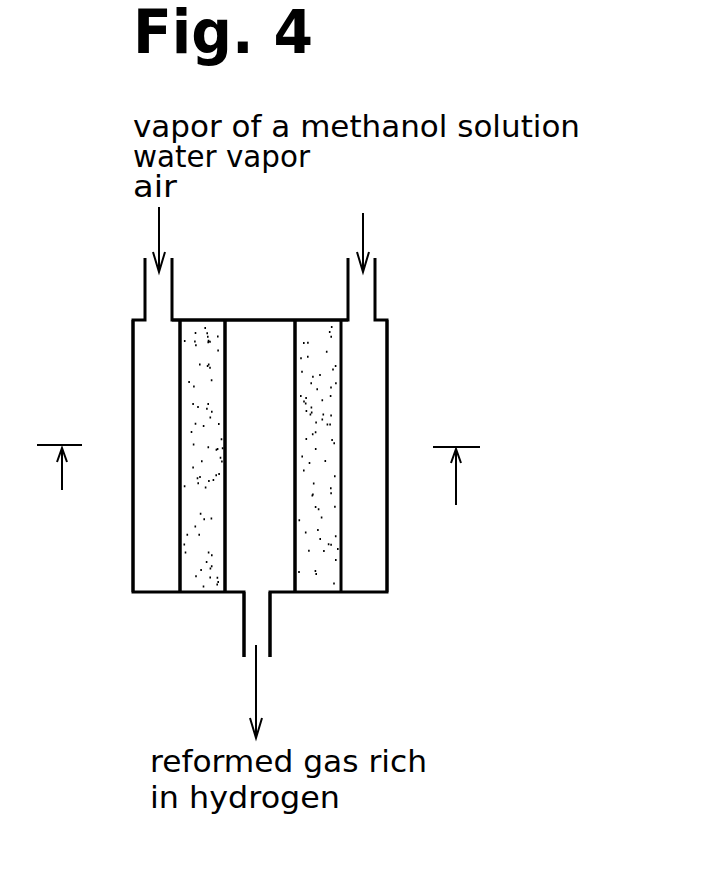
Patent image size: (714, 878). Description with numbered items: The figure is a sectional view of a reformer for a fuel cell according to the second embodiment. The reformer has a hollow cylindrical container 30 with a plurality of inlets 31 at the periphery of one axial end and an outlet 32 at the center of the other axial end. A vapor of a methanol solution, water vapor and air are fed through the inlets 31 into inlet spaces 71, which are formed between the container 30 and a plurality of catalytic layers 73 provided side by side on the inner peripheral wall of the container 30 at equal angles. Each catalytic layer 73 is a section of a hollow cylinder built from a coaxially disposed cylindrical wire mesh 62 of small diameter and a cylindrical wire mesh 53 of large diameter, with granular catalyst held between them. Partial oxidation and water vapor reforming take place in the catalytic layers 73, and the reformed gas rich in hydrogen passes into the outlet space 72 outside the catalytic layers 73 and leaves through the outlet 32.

The container 30 is at (133, 488).
The inlets 31 is at (348, 293).
The outlet 32 is at (271, 625).
The cylindrical wire mesh with a large diameter 53 is at (225, 562).
The cylindrical wire mesh with a small diameter 62 is at (178, 556).
The inlet spaces 71 is at (148, 528).
The outlet space 72 is at (277, 530).
The catalytic layers 73 is at (197, 379).